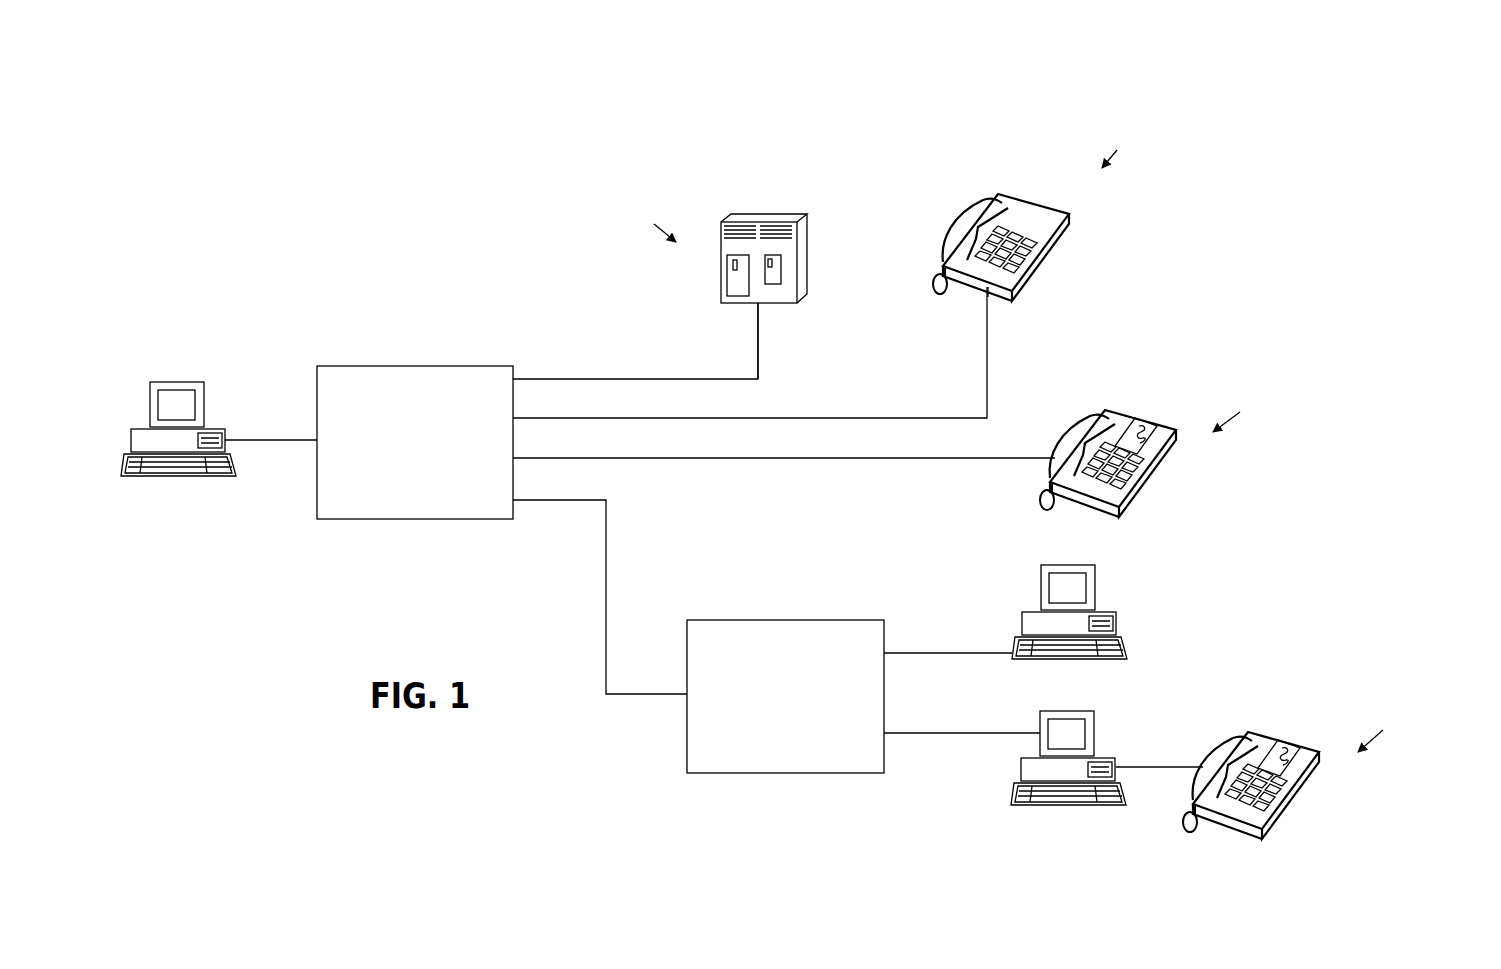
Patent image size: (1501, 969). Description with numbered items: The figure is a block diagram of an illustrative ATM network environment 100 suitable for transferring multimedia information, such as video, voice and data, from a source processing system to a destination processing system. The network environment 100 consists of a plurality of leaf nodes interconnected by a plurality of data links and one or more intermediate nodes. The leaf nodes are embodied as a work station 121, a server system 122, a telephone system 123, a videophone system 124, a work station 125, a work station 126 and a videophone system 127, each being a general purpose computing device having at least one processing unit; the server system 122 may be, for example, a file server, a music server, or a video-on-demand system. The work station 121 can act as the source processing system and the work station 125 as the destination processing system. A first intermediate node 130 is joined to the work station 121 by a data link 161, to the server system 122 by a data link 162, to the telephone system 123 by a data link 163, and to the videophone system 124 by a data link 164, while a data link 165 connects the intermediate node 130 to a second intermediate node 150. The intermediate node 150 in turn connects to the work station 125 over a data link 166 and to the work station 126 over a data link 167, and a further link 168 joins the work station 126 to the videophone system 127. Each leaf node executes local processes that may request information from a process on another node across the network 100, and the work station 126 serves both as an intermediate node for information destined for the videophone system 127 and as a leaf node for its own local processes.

The network environment 100 is at (305, 218).
The work station 121 is at (178, 382).
The server system 122 is at (808, 246).
The telephone system 123 is at (1050, 253).
The videophone system 124 is at (1165, 460).
The work station 125 is at (1096, 588).
The work station 126 is at (1040, 727).
The videophone system 127 is at (1305, 778).
The intermediate node 130 is at (410, 366).
The intermediate node 150 is at (787, 620).
The data link 161 is at (280, 440).
The data link 162 is at (580, 379).
The data link 163 is at (848, 418).
The data link 164 is at (845, 460).
The data link 165 is at (606, 542).
The data link 166 is at (950, 653).
The data link 167 is at (947, 733).
The link 168 is at (1167, 767).